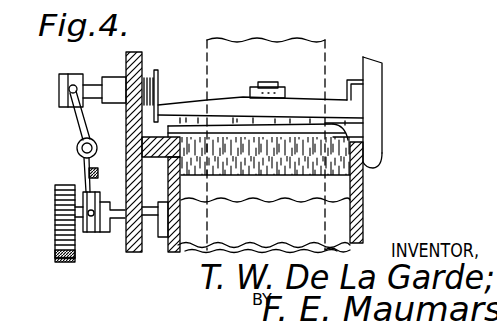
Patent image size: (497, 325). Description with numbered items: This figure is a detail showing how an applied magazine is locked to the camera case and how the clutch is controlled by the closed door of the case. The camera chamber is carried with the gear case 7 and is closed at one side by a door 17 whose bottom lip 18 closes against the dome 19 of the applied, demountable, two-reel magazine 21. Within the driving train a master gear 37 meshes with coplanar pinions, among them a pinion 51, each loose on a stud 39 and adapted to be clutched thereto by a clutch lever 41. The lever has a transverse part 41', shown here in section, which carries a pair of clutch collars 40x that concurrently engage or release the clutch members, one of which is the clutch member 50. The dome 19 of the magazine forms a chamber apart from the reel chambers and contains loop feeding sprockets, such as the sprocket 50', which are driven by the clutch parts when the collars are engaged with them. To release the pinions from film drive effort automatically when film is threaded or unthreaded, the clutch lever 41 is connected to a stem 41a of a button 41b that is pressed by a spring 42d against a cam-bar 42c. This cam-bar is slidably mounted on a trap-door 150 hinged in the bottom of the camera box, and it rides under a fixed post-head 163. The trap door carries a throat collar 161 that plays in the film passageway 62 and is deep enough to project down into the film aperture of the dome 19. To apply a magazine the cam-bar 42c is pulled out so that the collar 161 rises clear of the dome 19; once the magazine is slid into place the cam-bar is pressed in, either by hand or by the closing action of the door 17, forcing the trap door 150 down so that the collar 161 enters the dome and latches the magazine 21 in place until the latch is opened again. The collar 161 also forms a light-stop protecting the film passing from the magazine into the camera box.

The gear case 7 is at (127, 254).
The door 17 is at (384, 61).
The bottom lip 18 is at (380, 160).
The dome 19 is at (178, 228).
The two-reel magazine 21 is at (340, 225).
The master gear 37 is at (55, 251).
The stud 39 is at (55, 213).
The clutch collars 40x is at (72, 259).
The clutch lever 41 is at (63, 121).
The transverse part 41' is at (68, 166).
The stem 41a is at (97, 68).
The button 41b is at (160, 80).
The cam-bar 42c is at (301, 100).
The spring 42d is at (150, 78).
The clutch member 50 is at (104, 231).
The loop feeding sprocket 50' is at (152, 244).
The pinion 51 is at (57, 187).
The film passageway 62 is at (363, 147).
The trap-door 150 is at (363, 133).
The throat collar 161 is at (293, 176).
The post-head 163 is at (261, 87).